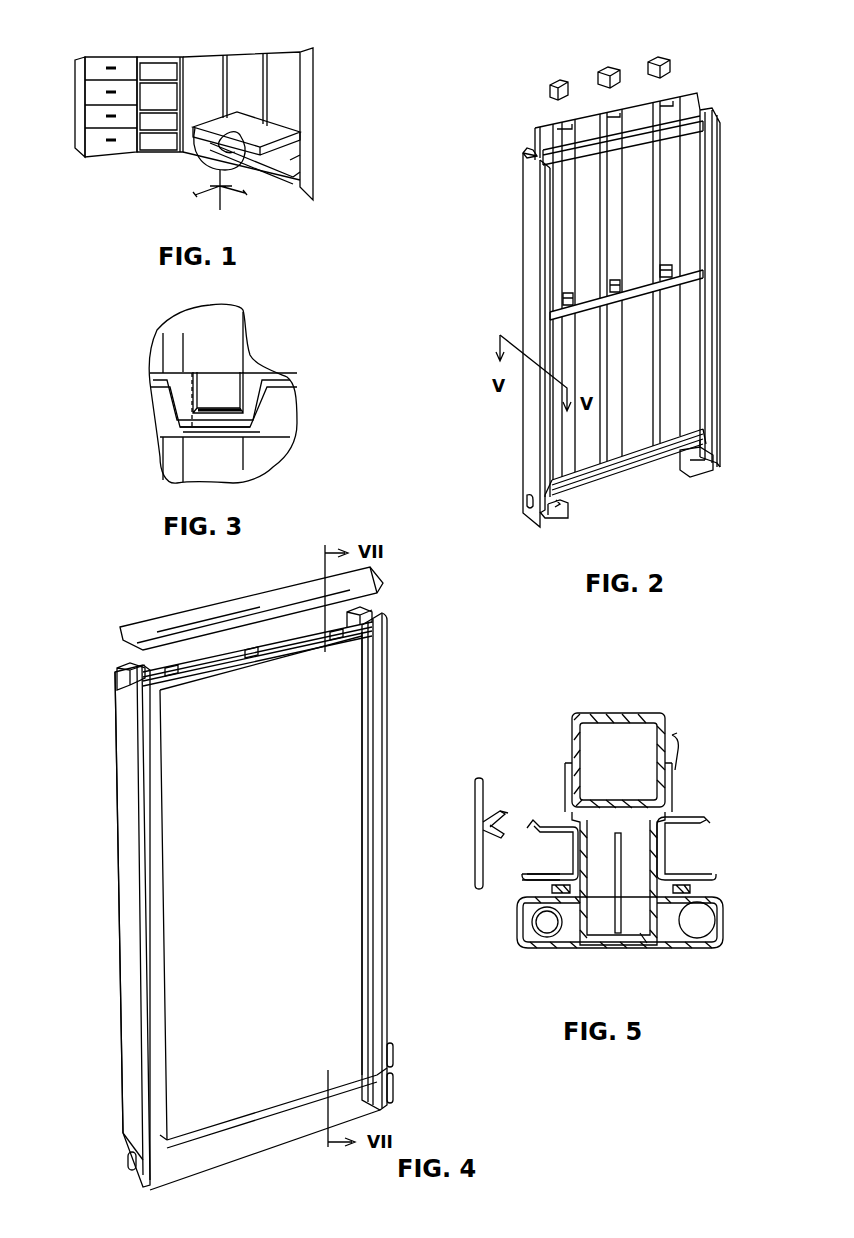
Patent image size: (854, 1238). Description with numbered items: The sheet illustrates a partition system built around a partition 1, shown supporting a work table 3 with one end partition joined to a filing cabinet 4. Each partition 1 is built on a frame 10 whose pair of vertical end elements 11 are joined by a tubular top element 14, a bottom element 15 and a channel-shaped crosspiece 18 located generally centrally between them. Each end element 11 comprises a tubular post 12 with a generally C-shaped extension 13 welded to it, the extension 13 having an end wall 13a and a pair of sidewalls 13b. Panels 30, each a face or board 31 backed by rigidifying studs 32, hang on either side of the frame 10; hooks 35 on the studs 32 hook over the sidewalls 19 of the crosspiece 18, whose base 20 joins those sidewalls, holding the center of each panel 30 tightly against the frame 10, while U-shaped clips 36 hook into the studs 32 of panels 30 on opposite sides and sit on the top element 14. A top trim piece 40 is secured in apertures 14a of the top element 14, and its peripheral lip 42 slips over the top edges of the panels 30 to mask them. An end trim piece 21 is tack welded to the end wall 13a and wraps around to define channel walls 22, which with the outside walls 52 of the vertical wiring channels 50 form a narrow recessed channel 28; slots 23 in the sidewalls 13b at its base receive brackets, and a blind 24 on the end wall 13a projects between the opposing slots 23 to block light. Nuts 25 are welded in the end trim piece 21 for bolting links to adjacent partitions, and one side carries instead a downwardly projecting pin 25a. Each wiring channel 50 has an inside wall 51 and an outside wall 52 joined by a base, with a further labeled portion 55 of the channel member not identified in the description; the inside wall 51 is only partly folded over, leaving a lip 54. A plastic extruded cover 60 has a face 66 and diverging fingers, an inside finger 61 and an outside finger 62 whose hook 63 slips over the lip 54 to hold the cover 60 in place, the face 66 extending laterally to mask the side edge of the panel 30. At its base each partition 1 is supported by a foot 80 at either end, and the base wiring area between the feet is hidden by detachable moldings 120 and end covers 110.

In FIG. 1, the partition 1 is at (174, 50).
In FIG. 2, the partition 1 is at (752, 126).
In FIG. 1, the work table 3 is at (246, 161).
In FIG. 1, the filing cabinet 4 is at (120, 48).
In FIG. 2, the frame 10 is at (519, 156).
In FIG. 2, the vertical end element 11 is at (728, 243).
In FIG. 5, the vertical end element 11 is at (680, 750).
In FIG. 5, the tubular post 12 is at (630, 713).
In FIG. 5, the C-shaped extension 13 is at (660, 812).
In FIG. 5, the end wall 13a is at (648, 948).
In FIG. 5, the sidewalls 13b is at (650, 837).
In FIG. 2, the top element 14 is at (690, 124).
In FIG. 4, the top element 14 is at (283, 650).
In FIG. 4, the apertures 14a is at (126, 665).
In FIG. 2, the bottom element 15 is at (610, 468).
In FIG. 3, the crosspiece 18 is at (162, 437).
In FIG. 2, the crosspiece 18 is at (637, 300).
In FIG. 3, the sidewalls 19 is at (262, 383).
In FIG. 3, the base 20 is at (250, 433).
In FIG. 2, the end trim piece 21 is at (530, 210).
In FIG. 4, the end trim piece 21 is at (120, 832).
In FIG. 5, the end trim piece 21 is at (590, 948).
In FIG. 5, the channel walls 22 is at (527, 897).
In FIG. 5, the slots 23 is at (583, 882).
In FIG. 5, the blind 24 is at (620, 875).
In FIG. 5, the nuts 25 is at (535, 938).
In FIG. 5, the downwardly projecting pin 25a is at (705, 922).
In FIG. 5, the recessed channel 28 is at (620, 889).
In FIG. 2, the panel 30 is at (612, 236).
In FIG. 4, the panel 30 is at (295, 857).
In FIG. 2, the face 31 is at (586, 118).
In FIG. 3, the rigidifying studs 32 is at (223, 393).
In FIG. 2, the rigidifying studs 32 is at (568, 212).
In FIG. 3, the hooks 35 is at (228, 380).
In FIG. 2, the hooks 35 is at (573, 295).
In FIG. 2, the U-shaped clips 36 is at (558, 83).
In FIG. 4, the U-shaped clips 36 is at (250, 656).
In FIG. 4, the top trim piece 40 is at (275, 587).
In FIG. 4, the peripheral lip 42 is at (193, 632).
In FIG. 5, the vertical wiring channel 50 is at (708, 848).
In FIG. 5, the inside wall 51 is at (570, 824).
In FIG. 5, the outside wall 52 is at (556, 872).
In FIG. 5, the lip 54 is at (534, 820).
In FIG. 5, the clip web 55 is at (577, 834).
In FIG. 4, the cover 60 is at (360, 745).
In FIG. 5, the cover 60 is at (470, 783).
In FIG. 5, the inside finger 61 is at (495, 838).
In FIG. 5, the outside finger 62 is at (496, 811).
In FIG. 5, the hook 63 is at (505, 813).
In FIG. 5, the face 66 is at (475, 850).
In FIG. 2, the foot 80 is at (553, 534).
In FIG. 4, the end covers 110 is at (129, 1180).
In FIG. 4, the detachable moldings 120 is at (272, 1137).